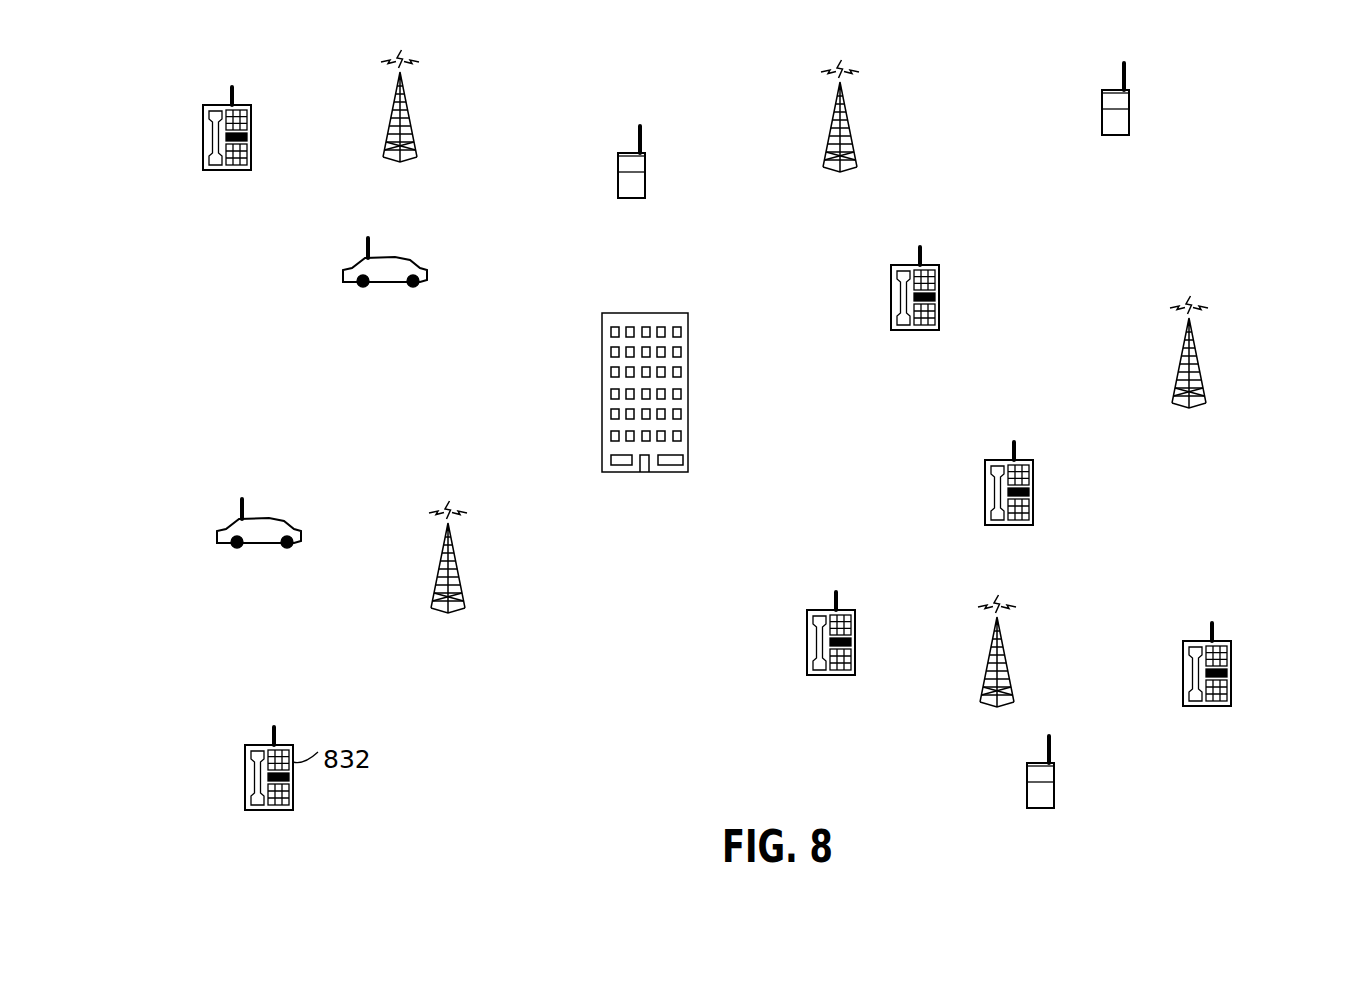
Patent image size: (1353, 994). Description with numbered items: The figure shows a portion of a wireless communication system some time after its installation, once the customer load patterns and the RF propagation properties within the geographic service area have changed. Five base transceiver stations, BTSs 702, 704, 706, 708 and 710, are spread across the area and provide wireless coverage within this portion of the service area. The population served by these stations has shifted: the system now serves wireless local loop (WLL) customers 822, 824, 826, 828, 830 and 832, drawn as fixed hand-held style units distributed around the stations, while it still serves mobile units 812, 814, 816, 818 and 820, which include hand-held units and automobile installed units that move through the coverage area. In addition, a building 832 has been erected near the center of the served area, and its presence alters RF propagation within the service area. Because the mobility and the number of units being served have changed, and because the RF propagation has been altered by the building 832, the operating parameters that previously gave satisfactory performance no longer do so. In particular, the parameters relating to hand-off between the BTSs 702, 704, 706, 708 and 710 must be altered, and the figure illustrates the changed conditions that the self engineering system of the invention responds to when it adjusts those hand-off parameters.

The BTS 702 is at (412, 154).
The BTS 704 is at (840, 172).
The BTS 706 is at (1189, 408).
The BTS 708 is at (448, 612).
The BTS 710 is at (1007, 697).
The mobile unit 812 is at (645, 163).
The mobile unit 814 is at (1128, 98).
The mobile unit 816 is at (1054, 770).
The mobile unit 818 is at (392, 283).
The mobile unit 820 is at (270, 544).
The wireless local loop customer 822 is at (252, 122).
The wireless local loop customer 824 is at (938, 292).
The wireless local loop customer 826 is at (1032, 480).
The wireless local loop customer 828 is at (855, 628).
The wireless local loop customer 830 is at (1231, 660).
The building 832 is at (602, 394).